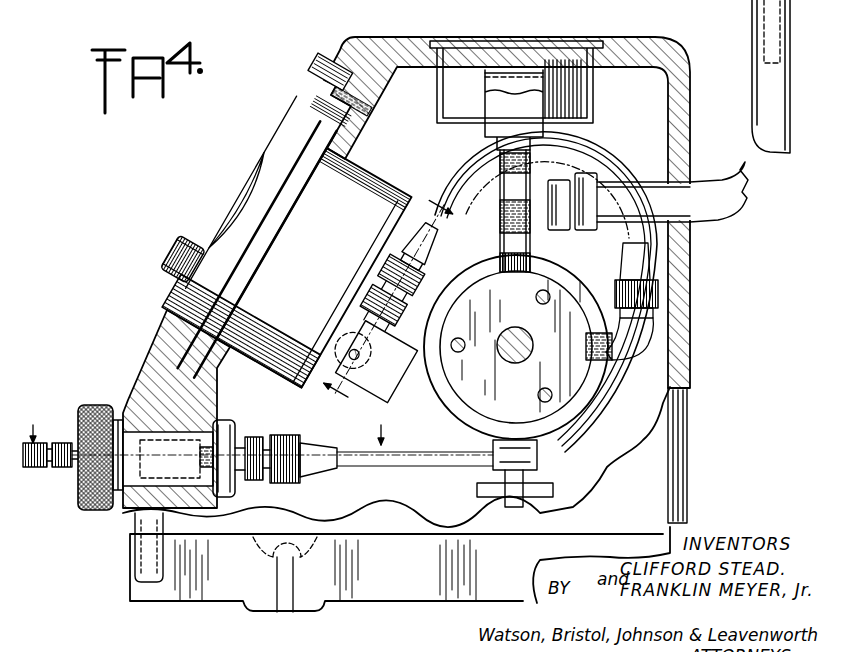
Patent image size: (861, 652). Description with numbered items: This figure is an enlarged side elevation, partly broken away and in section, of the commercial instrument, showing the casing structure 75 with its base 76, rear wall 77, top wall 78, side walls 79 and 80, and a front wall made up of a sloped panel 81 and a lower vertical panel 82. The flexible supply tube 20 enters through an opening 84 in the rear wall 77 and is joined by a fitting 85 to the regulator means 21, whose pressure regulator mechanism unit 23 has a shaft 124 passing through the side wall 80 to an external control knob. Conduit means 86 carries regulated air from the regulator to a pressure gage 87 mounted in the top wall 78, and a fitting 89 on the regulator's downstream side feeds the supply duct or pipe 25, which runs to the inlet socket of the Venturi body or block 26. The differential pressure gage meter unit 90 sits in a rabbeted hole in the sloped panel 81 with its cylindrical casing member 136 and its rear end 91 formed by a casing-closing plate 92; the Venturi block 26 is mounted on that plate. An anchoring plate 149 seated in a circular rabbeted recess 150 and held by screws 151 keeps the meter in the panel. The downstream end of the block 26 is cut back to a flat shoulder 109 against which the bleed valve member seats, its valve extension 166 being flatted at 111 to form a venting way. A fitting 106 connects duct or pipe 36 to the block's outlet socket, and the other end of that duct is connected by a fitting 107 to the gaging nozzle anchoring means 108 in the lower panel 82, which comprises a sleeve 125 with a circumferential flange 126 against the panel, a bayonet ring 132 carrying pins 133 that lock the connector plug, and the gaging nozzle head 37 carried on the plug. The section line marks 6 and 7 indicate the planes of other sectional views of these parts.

The flexible supply tube 20 is at (738, 178).
The regulator means 21 is at (576, 268).
The pressure regulator mechanism unit 23 is at (578, 292).
The supply duct or pipe 25 is at (598, 152).
The Venturi body or block 26 is at (378, 386).
The duct or pipe 36 is at (567, 447).
The gaging nozzle means or head 37 is at (36, 441).
The casing structure 75 is at (676, 42).
The base 76 is at (206, 600).
The rear wall 77 is at (688, 355).
The top wall 78 is at (620, 40).
The side wall 79 is at (652, 110).
The side wall 80 is at (655, 462).
The sloped panel 81 is at (358, 55).
The lower vertical panel 82 is at (140, 400).
The opening 84 is at (677, 283).
The fitting 85 is at (562, 222).
The conduit means 86 is at (495, 212).
The pressure gage 87 is at (548, 40).
The fitting 89 is at (686, 325).
The differential pressure gage meter unit 90 is at (287, 117).
The rear end 91 is at (430, 202).
The casing-closing plate 92 is at (300, 390).
The fitting 106 is at (413, 307).
The fitting 107 is at (318, 443).
The gaging nozzle anchoring means 108 is at (108, 512).
The flat shoulder 109 is at (370, 348).
The flatted side (venting way) 111 is at (309, 403).
The shaft 124 is at (518, 355).
The sleeve 125 is at (160, 497).
The circumferential flange 126 is at (228, 426).
The bayonet ring 132 is at (92, 405).
The pins 133 is at (88, 466).
The cylindrical casing member 136 is at (374, 172).
The anchoring plate 149 is at (280, 143).
The circular rabbeted recess 150 is at (160, 375).
The screws 151 is at (320, 72).
The valve extension 166 is at (362, 353).
The section line 6- 6 is at (260, 461).
The section line 7- 7 is at (403, 312).